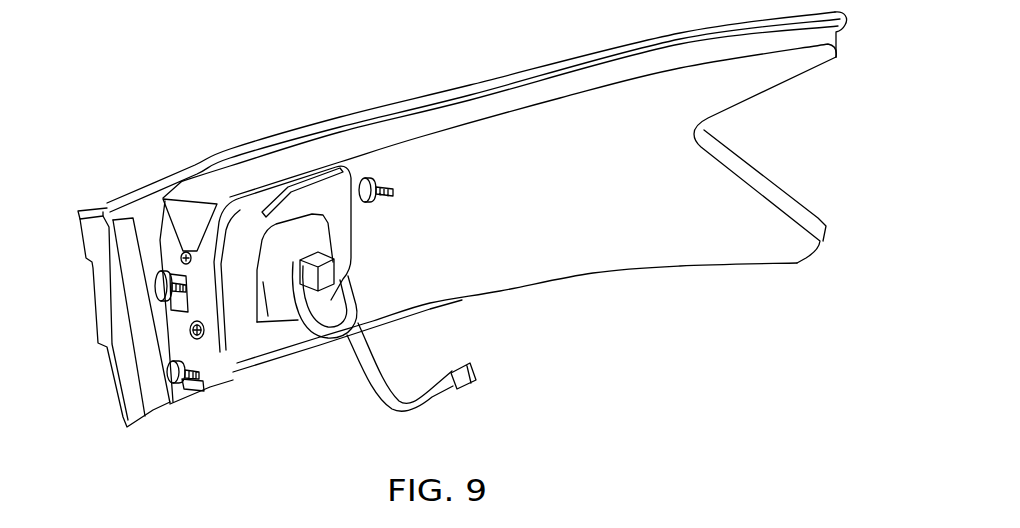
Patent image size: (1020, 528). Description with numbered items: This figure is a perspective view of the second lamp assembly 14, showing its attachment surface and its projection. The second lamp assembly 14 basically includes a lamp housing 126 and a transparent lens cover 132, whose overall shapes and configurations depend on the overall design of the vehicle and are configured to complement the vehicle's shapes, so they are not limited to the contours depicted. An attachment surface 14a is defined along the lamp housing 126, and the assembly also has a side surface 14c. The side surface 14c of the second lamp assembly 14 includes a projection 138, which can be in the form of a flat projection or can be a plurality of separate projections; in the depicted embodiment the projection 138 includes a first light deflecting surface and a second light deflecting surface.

The second lamp assembly 14 is at (352, 66).
The attachment surface 14a is at (587, 238).
The side surface 14c is at (88, 263).
The lamp housing 126 is at (718, 202).
The transparent lens cover 132 is at (90, 208).
The projection 138 is at (138, 409).